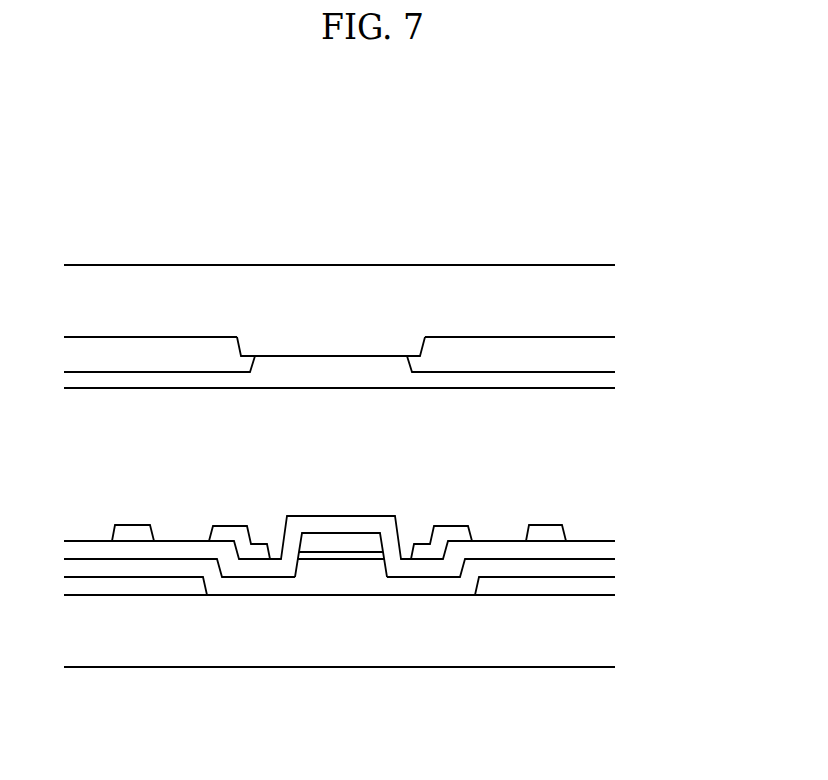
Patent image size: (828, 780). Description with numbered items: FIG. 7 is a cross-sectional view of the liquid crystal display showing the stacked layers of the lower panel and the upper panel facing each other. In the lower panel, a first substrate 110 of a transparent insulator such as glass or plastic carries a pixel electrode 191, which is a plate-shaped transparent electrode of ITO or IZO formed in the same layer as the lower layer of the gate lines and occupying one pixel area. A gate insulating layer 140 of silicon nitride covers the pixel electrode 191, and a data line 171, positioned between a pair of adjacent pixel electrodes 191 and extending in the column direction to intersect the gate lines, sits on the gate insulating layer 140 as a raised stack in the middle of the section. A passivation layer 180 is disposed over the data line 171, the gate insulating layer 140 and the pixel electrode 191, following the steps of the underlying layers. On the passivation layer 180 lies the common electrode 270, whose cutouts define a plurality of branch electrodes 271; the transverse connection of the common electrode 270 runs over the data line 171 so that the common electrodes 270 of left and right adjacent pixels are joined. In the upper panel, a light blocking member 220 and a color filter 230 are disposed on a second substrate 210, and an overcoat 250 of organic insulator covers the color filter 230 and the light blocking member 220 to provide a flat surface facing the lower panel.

The first substrate 110 is at (597, 634).
The gate insulating layer 140 is at (607, 568).
The data line 171 is at (342, 542).
The passivation layer 180 is at (603, 551).
The pixel electrode 191 is at (140, 587).
The second substrate 210 is at (493, 290).
The light blocking member 220 is at (289, 346).
The color filter 230 is at (157, 353).
The overcoat 250 is at (375, 372).
The common electrode 270 is at (228, 533).
The branch electrode 271 is at (132, 533).